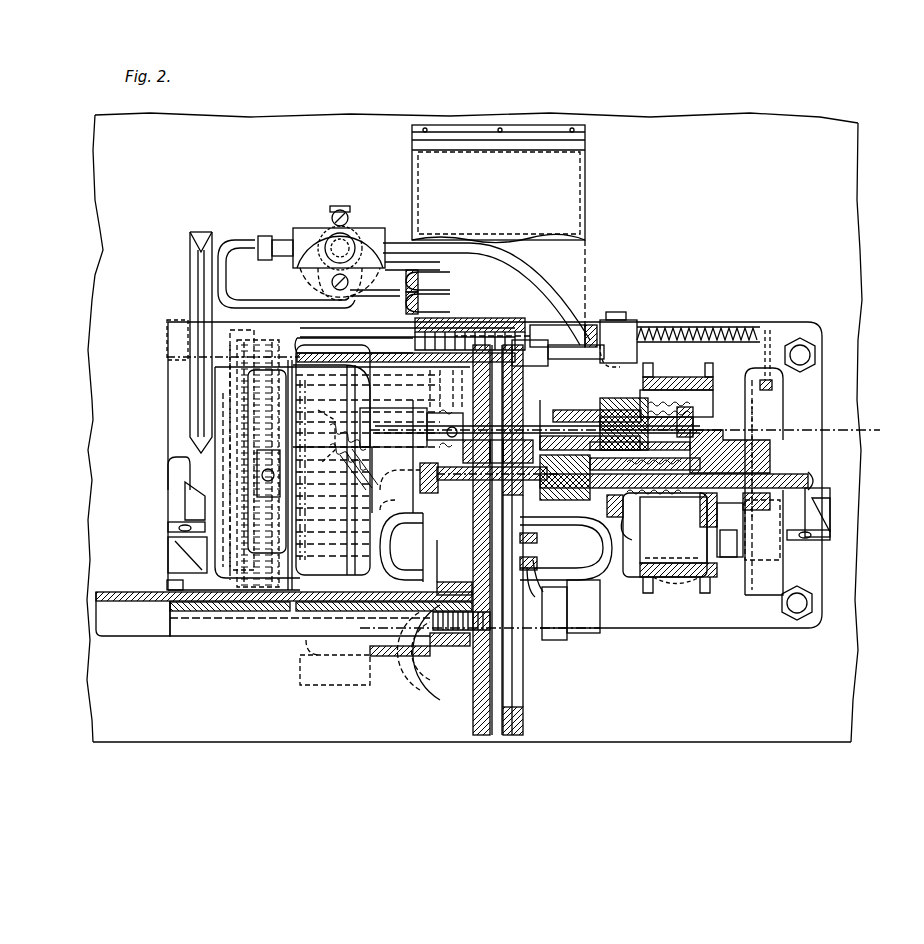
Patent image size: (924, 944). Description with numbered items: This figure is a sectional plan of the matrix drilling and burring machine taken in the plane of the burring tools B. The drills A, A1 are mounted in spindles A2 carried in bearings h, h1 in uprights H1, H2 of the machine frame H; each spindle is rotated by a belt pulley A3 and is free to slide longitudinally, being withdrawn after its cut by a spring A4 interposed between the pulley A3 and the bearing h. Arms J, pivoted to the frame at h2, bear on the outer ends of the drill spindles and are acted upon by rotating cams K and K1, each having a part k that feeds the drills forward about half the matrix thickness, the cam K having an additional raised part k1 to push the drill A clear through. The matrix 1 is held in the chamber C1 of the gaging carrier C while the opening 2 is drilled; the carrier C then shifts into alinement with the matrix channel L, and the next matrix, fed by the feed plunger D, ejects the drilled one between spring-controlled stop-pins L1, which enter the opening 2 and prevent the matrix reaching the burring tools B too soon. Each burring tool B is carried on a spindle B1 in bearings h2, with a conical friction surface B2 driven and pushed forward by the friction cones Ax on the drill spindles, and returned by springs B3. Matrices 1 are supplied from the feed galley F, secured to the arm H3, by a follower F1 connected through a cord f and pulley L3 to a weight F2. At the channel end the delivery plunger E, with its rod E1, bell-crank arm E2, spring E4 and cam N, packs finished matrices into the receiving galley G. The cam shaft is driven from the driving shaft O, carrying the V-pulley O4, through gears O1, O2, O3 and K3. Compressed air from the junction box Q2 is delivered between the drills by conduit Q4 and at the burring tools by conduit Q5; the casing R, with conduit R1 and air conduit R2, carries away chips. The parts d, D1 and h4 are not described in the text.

The conduit Q4 is at (325, 234).
The junction box Q2 is at (330, 232).
The third conduit Q5 is at (360, 235).
The gear O2 is at (440, 300).
The conduit R1 is at (575, 222).
The receiving galley G is at (380, 345).
The gear O1 is at (450, 345).
The burring tools B is at (462, 340).
The matrix 1 is at (495, 348).
The opening 2 is at (508, 340).
The delivery plunger E is at (526, 342).
The rod E1 is at (560, 345).
The upper arm of bell-crank lever E2 is at (612, 330).
The spring E4 is at (660, 326).
The springs B3 is at (355, 408).
The belt pulley A3 is at (285, 541).
The driving shaft O is at (176, 328).
The cam K1 is at (240, 395).
The V-pulley O4 is at (190, 403).
The gear O3 is at (226, 420).
The cam part k is at (770, 420).
The upright H2 is at (225, 440).
The conical friction surface B2 is at (330, 418).
The spindle B1 is at (548, 420).
The bearings h2 is at (572, 410).
The nut h4 is at (604, 410).
The cam N is at (740, 445).
The cam K is at (782, 410).
The raised part k1 is at (790, 460).
The arms J is at (172, 495).
The gear K3 is at (176, 545).
The machine frame H is at (178, 566).
The stop-pins L1 is at (533, 452).
The drill A1 is at (416, 456).
The gaging carrier C is at (478, 490).
The spindles A2 is at (405, 485).
The spring A4 is at (385, 492).
The friction cones Ax is at (310, 500).
The air conveying conduit R2 is at (401, 546).
The chamber C1 is at (480, 540).
The feed plunger D is at (478, 556).
The drill A is at (522, 485).
The casing R is at (556, 520).
The port d is at (540, 578).
The casing foot D1 is at (548, 600).
The follower F1 is at (385, 624).
The feed galley F is at (298, 625).
The cord f is at (400, 656).
The pulley L3 is at (413, 656).
The weight F2 is at (448, 697).
The matrix channel L is at (498, 696).
The bearing h is at (628, 528).
The upright H1 is at (670, 543).
The bearing h1 is at (738, 504).
The arm H3 is at (152, 632).